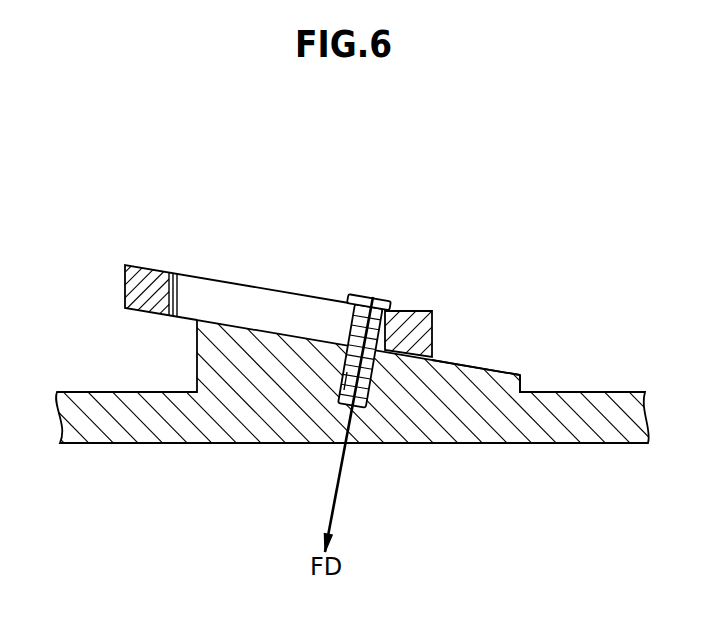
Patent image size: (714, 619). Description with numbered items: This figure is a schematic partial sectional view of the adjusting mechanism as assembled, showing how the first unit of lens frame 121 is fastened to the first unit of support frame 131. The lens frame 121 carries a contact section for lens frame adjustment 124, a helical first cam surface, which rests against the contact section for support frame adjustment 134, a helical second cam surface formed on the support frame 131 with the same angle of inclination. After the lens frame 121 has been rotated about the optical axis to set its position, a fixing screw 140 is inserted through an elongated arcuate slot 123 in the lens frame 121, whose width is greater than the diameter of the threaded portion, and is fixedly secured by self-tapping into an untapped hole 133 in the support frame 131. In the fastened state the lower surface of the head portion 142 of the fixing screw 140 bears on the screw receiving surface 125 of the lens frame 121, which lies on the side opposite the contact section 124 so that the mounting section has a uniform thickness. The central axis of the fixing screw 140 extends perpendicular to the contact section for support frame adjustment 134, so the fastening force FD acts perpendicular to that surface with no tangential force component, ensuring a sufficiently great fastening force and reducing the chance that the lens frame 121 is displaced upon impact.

The first unit of lens frame 121 is at (142, 272).
The elongated arcuate slot 123 is at (198, 298).
The head portion 142 is at (350, 294).
The fixing screw 140 is at (387, 308).
The screw receiving surface 125 is at (400, 307).
The contact section for support frame adjustment 134 is at (500, 372).
The first unit of support frame 131 is at (112, 422).
The untapped hole 133 is at (348, 370).
The contact section for lens frame adjustment 124 is at (411, 359).